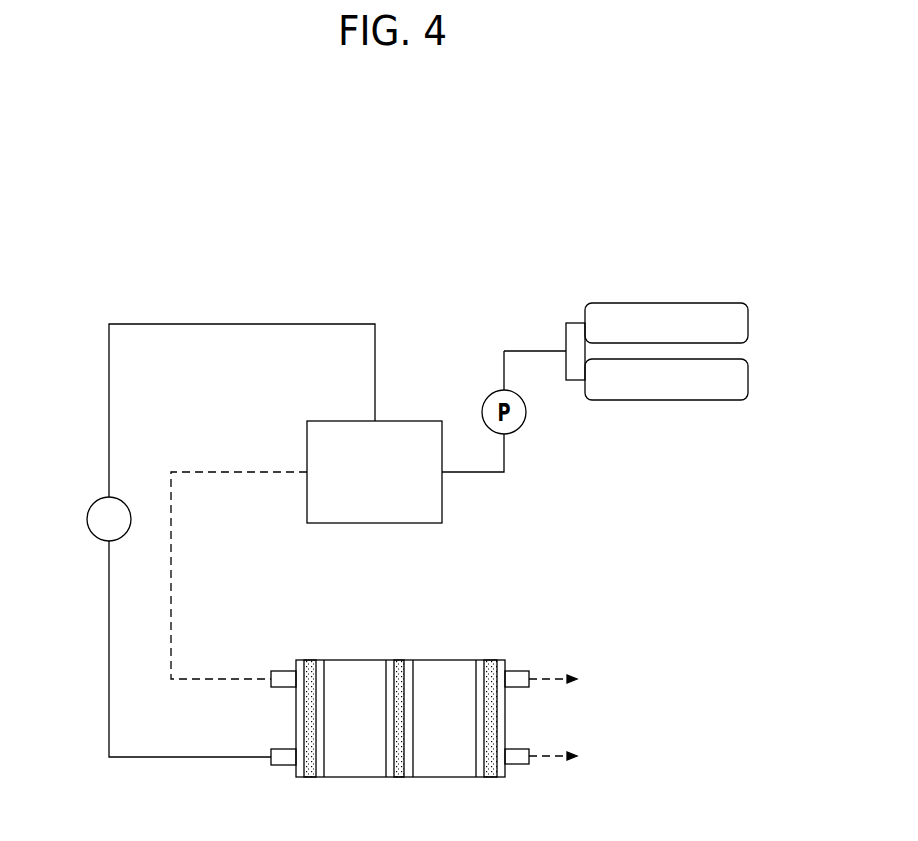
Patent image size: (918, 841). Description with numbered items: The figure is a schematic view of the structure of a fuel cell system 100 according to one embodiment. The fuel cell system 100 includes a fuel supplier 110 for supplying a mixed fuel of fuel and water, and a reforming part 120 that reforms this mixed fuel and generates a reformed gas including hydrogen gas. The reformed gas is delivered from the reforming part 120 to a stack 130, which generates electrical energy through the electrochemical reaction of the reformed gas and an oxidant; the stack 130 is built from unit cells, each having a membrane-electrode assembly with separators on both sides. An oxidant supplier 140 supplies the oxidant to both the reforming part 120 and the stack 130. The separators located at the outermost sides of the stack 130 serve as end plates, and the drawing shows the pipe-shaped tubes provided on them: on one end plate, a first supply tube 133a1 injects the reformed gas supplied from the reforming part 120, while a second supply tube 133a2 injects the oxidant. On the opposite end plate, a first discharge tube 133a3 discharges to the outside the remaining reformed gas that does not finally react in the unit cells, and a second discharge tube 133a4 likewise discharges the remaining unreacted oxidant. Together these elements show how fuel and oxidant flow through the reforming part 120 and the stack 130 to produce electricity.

The fuel cell system 100 is at (362, 217).
The fuel supplier 110 is at (540, 316).
The reforming part 120 is at (337, 407).
The stack 130 is at (383, 642).
The oxidant supplier 140 is at (83, 487).
The first supply tube 133a1 is at (270, 688).
The second supply tube 133a2 is at (270, 766).
The first discharge tube 133a3 is at (530, 764).
The second discharge tube 133a4 is at (530, 688).